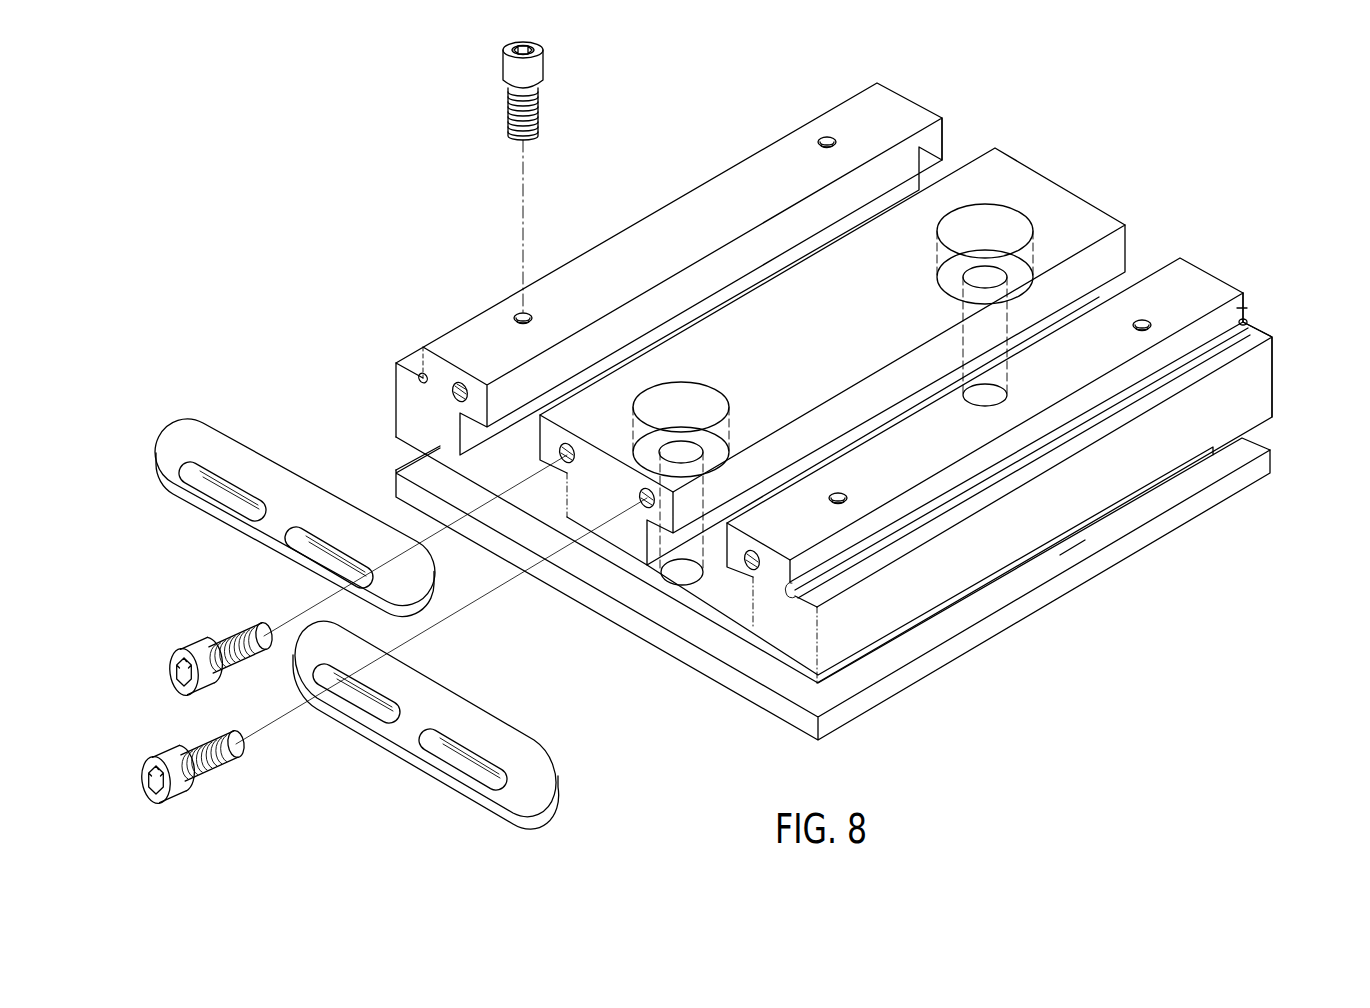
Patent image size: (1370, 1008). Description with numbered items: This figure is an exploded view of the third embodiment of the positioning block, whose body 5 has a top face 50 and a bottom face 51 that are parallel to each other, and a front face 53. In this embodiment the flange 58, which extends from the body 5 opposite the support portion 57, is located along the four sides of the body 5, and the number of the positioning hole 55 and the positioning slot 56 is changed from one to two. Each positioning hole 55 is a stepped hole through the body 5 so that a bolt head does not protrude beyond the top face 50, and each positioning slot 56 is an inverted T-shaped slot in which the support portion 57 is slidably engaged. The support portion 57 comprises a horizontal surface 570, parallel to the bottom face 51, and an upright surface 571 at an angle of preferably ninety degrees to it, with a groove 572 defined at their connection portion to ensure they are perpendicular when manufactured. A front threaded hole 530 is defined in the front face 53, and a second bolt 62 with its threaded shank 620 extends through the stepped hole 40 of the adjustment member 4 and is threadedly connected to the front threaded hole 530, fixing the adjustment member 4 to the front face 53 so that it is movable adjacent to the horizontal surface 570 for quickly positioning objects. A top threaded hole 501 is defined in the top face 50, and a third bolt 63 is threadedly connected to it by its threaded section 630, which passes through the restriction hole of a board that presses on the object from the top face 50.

The adjustment member 4 is at (335, 607).
The stepped hole 40 is at (188, 480).
The body 5 is at (824, 427).
The top face 50 is at (590, 282).
The top threaded hole 501 is at (520, 316).
The bottom face 51 is at (937, 665).
The front face 53 is at (783, 703).
The front threaded hole 530 is at (750, 566).
The positioning hole 55 is at (957, 233).
The positioning slot 56 is at (952, 163).
The support portion 57 is at (996, 475).
The horizontal surface 570 is at (407, 360).
The upright surface 571 is at (1268, 266).
The groove 572 is at (418, 380).
The flange 58 is at (405, 470).
The second bolt 62 is at (179, 693).
The threaded portion 620 is at (225, 640).
The third bolt 63 is at (510, 73).
The threaded section 630 is at (512, 128).